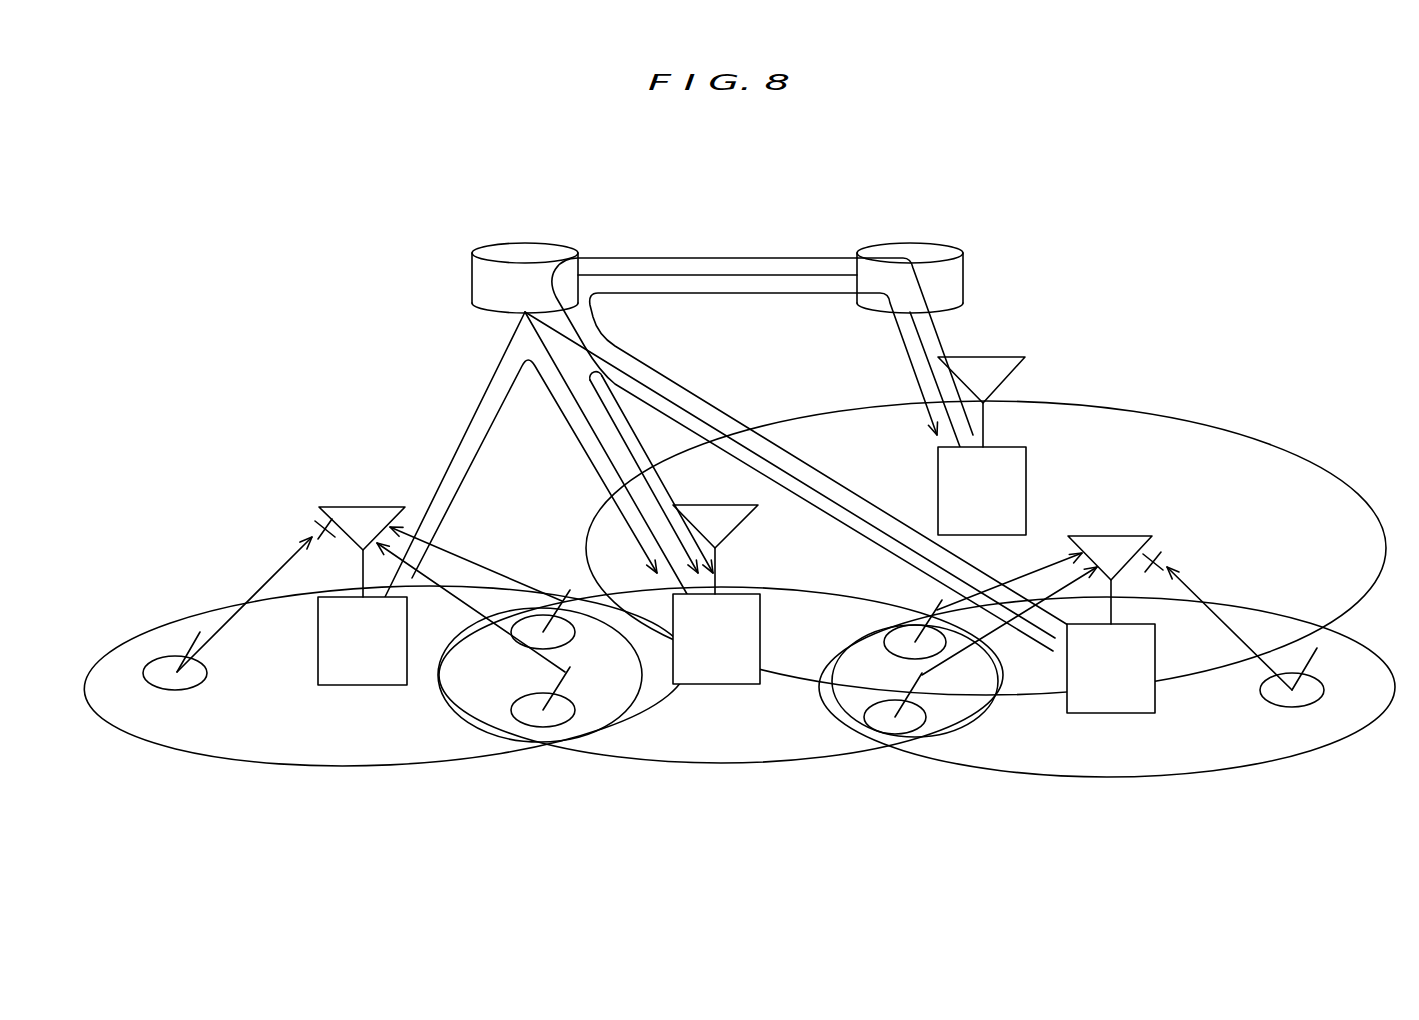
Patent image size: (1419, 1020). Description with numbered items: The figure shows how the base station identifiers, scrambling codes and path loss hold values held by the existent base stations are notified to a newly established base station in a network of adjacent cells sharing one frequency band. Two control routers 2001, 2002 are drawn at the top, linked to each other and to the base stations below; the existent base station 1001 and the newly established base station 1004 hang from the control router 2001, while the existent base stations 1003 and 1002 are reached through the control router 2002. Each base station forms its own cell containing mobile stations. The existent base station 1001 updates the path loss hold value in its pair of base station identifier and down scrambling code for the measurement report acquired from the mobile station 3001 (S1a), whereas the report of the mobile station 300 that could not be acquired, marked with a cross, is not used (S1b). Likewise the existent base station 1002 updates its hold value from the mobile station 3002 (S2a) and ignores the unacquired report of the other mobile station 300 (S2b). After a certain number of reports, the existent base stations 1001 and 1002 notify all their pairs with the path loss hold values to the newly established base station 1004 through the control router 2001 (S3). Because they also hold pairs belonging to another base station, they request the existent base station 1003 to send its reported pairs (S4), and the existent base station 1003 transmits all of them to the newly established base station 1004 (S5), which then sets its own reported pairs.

The control router 2001 is at (525, 249).
The control router 2002 is at (910, 249).
The existent base station 1001 is at (318, 645).
The existent base station 1002 is at (1157, 640).
The existent base station 1003 is at (1027, 506).
The newly established base station 1004 is at (761, 628).
The mobile station 300 is at (733, 686).
The mobile station 3001 is at (540, 666).
The mobile station 3002 is at (915, 668).
The path loss hold value update step S1a is at (450, 609).
The non-updating step S1b is at (268, 562).
The path loss hold value update step S2a is at (1052, 598).
The non-updating step S2b is at (1203, 584).
The notification step S3 is at (638, 454).
The request step S4 is at (724, 300).
The transmission step S5 is at (738, 256).